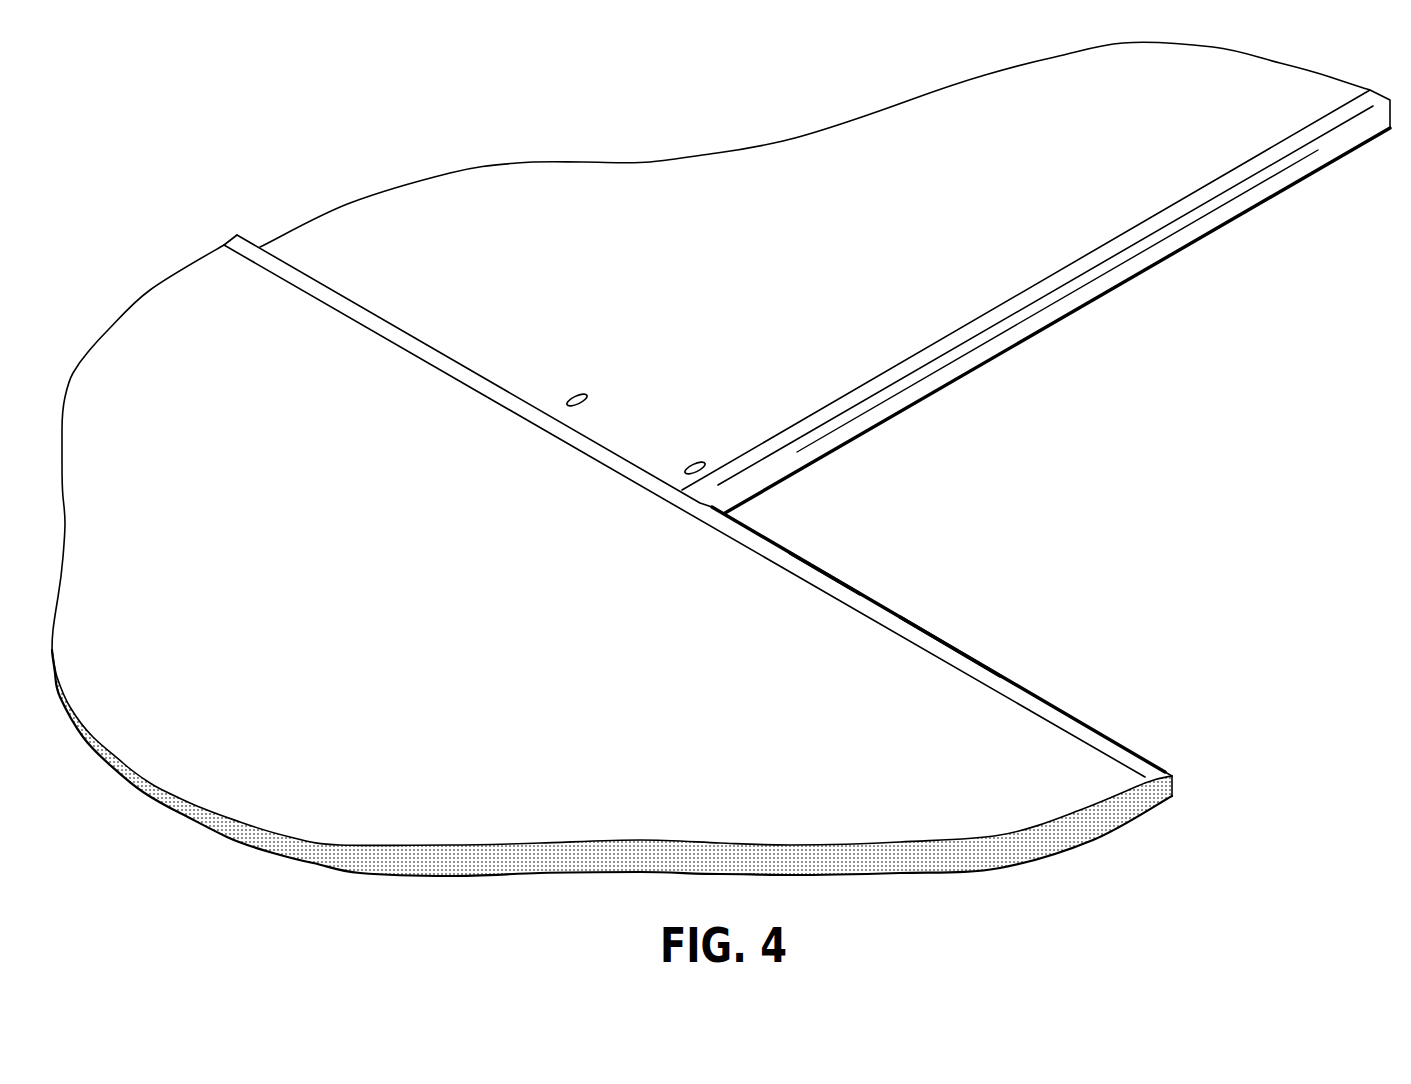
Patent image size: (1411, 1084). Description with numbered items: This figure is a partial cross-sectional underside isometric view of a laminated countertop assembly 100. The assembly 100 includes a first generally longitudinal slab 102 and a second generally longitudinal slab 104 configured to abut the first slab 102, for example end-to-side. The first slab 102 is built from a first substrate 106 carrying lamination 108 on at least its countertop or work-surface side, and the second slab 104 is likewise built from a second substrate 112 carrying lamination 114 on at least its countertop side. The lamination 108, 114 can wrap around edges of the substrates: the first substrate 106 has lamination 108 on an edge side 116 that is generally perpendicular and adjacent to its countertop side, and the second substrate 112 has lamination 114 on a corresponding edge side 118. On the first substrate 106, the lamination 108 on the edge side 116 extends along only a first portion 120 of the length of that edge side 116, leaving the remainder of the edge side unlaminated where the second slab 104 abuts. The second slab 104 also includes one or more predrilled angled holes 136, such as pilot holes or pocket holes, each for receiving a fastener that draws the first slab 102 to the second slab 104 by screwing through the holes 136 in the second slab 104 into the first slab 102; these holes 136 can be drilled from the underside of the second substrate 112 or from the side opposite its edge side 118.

The laminated countertop assembly 100 is at (716, 474).
The first generally longitudinal slab 102 is at (706, 474).
The second generally longitudinal slab 104 is at (711, 346).
The first substrate 106 is at (230, 808).
The lamination 108 is at (698, 506).
The second substrate 112 is at (948, 106).
The lamination 114 is at (1036, 301).
The edge side 116 is at (937, 635).
The edge side 118 is at (1217, 218).
The first portion 120 is at (850, 583).
The predrilled angled hole 136 is at (575, 392).